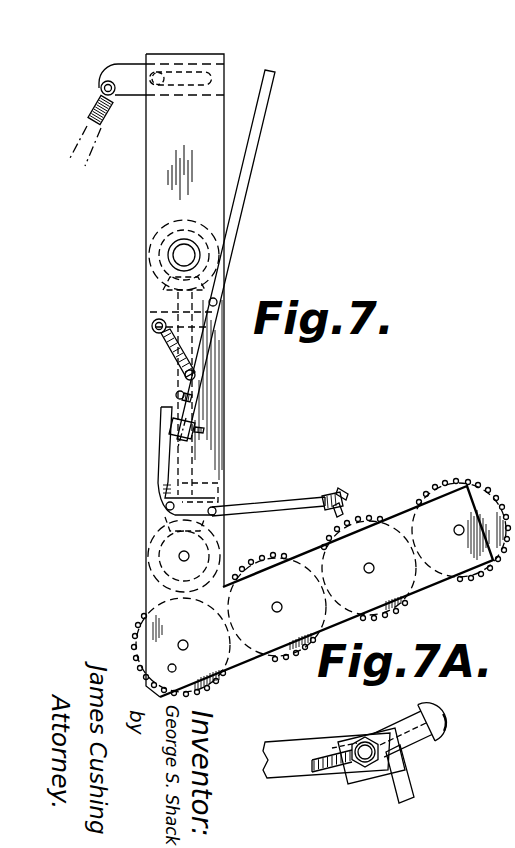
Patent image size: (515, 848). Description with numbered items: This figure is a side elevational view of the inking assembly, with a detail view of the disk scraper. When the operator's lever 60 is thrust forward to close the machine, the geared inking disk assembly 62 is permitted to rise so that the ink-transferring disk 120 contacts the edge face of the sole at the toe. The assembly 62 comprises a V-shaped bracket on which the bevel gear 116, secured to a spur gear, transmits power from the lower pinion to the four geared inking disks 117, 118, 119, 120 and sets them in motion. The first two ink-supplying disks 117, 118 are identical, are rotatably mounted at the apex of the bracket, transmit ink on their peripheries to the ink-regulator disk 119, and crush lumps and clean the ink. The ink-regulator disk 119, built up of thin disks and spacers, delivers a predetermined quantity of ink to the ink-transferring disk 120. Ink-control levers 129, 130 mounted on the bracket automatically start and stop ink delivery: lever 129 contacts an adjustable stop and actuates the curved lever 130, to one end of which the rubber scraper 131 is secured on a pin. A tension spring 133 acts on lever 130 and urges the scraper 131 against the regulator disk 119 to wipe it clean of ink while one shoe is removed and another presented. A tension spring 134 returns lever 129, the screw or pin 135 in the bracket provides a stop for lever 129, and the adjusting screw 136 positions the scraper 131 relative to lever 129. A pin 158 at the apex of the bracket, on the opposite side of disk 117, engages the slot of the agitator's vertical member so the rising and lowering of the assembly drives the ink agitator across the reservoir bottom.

In FIG. 7, the operator's lever 60 is at (514, 386).
In FIG. 7, the geared inking disk assembly 62 is at (147, 291).
In FIG. 7, the bevel gear 116 is at (215, 553).
In FIG. 7, the ink-supplying disk 117 is at (226, 673).
In FIG. 7, the ink-supplying disk 118 is at (325, 628).
In FIG. 7, the ink-regulator disk 119 is at (404, 600).
In FIG. 7, the ink-transferring disk 120 is at (478, 575).
In FIG. 7, the ink-control lever 129 is at (234, 210).
In FIG. 7, the curved ink-control lever 130 is at (268, 508).
In FIG. 7, the rubber scraper 131 is at (336, 494).
In FIG. 7A, the rubber scraper 131 is at (359, 712).
In FIG. 7, the tension spring 133 is at (182, 492).
In FIG. 7, the tension spring 134 is at (166, 348).
In FIG. 7, the screw or pin 135 is at (176, 395).
In FIG. 7, the adjusting screw 136 is at (205, 430).
In FIG. 7, the pin 158 is at (168, 666).